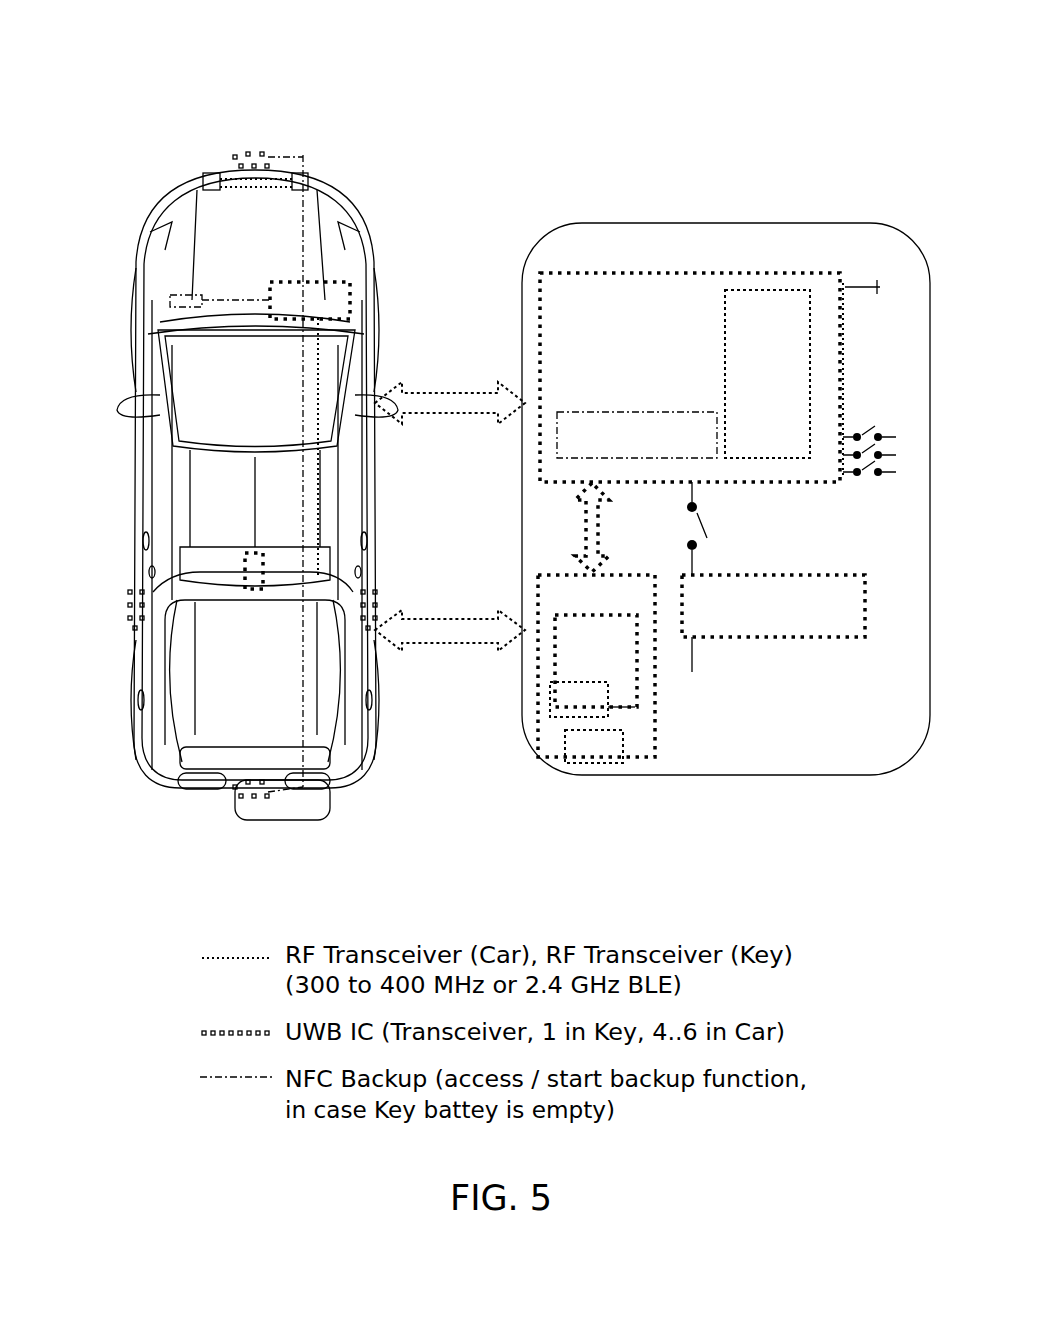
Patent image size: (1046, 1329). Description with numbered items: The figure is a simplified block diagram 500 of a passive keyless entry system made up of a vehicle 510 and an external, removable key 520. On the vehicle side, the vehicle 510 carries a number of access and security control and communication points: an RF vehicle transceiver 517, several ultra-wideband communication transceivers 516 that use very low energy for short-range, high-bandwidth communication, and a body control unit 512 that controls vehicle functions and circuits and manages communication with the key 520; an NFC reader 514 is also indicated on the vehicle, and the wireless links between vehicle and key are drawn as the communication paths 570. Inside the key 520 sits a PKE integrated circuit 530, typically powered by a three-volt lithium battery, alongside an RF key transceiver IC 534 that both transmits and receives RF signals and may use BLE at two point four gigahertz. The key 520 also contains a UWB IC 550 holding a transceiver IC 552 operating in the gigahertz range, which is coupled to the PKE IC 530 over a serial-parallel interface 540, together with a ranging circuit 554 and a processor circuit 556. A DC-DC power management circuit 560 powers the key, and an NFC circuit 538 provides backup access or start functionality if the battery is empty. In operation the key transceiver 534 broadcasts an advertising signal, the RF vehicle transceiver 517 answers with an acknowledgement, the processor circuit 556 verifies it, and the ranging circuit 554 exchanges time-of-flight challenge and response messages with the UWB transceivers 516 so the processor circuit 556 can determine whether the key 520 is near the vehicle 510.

The block diagram of a PKE system 500 is at (130, 82).
The vehicle 510 is at (187, 173).
The body control unit 512 is at (347, 282).
The NFC reader 514 is at (178, 296).
The ultra-wideband communication transceivers 516 is at (257, 157).
The RF vehicle transceiver 517 is at (250, 582).
The key 520 is at (885, 225).
The PKE integrated circuit 530 is at (653, 275).
The RF key transceiver IC 534 is at (790, 288).
The near-field communication circuit 538 is at (678, 420).
The serial-parallel interface 540 is at (590, 506).
The UWB IC 550 is at (652, 653).
The transceiver IC 552 is at (632, 697).
The ranging circuit 554 is at (592, 700).
The processor circuit 556 is at (594, 746).
The DC-DC power management circuit 560 is at (830, 640).
The communication links 570 is at (468, 332).